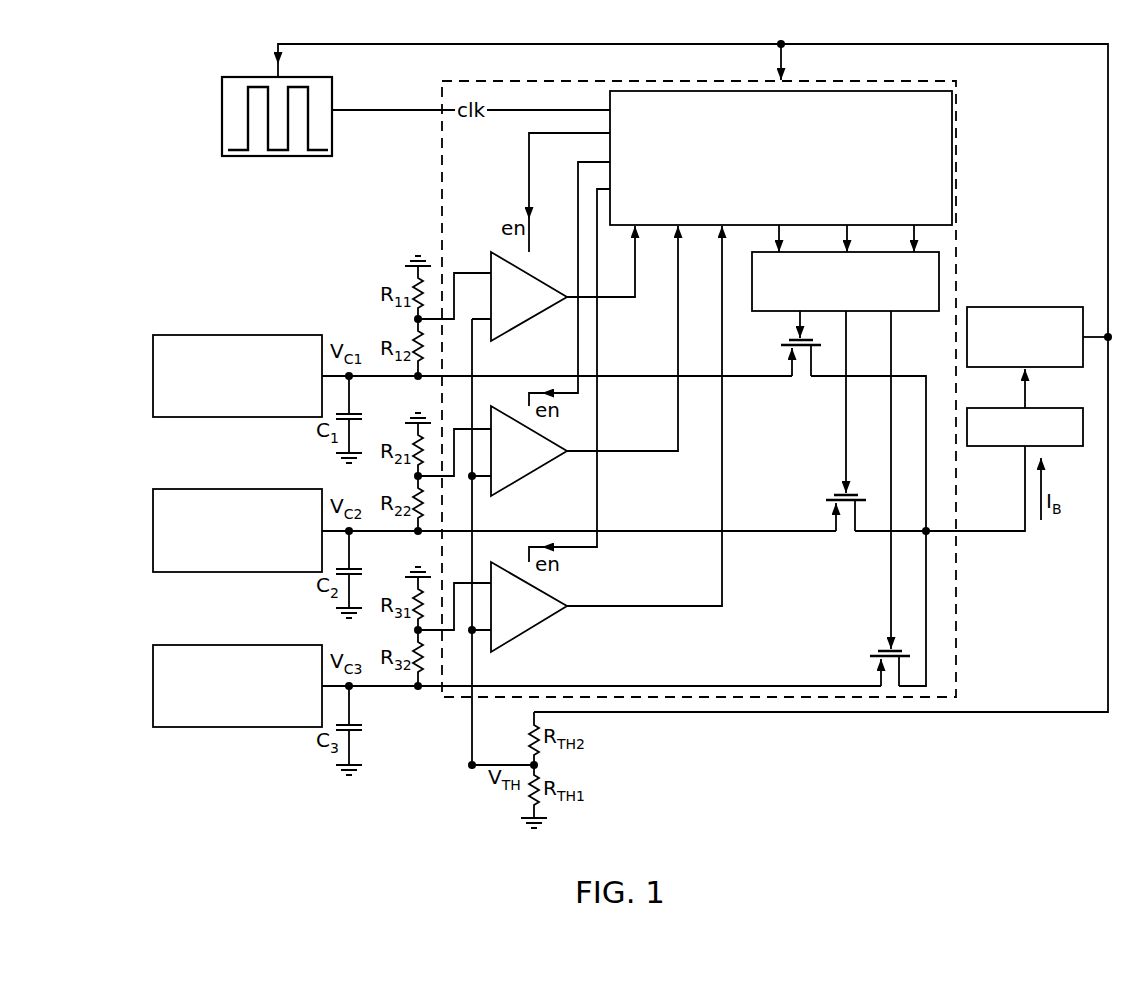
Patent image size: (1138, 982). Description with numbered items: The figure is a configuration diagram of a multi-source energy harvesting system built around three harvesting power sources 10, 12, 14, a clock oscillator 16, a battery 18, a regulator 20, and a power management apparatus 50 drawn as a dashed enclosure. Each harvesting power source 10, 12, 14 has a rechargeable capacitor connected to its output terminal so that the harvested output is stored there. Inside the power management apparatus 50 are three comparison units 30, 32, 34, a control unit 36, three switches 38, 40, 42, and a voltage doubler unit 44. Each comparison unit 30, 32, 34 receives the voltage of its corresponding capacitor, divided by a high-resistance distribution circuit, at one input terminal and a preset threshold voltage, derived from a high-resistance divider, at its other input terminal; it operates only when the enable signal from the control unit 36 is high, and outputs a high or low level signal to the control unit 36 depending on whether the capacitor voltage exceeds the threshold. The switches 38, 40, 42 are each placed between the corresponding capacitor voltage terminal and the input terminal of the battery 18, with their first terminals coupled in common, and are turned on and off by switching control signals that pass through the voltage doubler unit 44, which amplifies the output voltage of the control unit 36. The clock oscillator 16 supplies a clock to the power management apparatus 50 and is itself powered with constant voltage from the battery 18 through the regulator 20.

The harvesting power source 10 is at (194, 333).
The harvesting power source 12 is at (194, 489).
The harvesting power source 14 is at (194, 645).
The clock oscillator 16 is at (280, 158).
The battery 18 is at (995, 448).
The regulator 20 is at (1023, 307).
The comparison unit 30 is at (530, 320).
The comparison unit 32 is at (535, 472).
The comparison unit 34 is at (535, 627).
The control unit 36 is at (952, 160).
The switch 38 is at (822, 348).
The switch 40 is at (824, 500).
The switch 42 is at (868, 656).
The voltage doubler unit 44 is at (770, 313).
The power management apparatus 50 is at (956, 605).